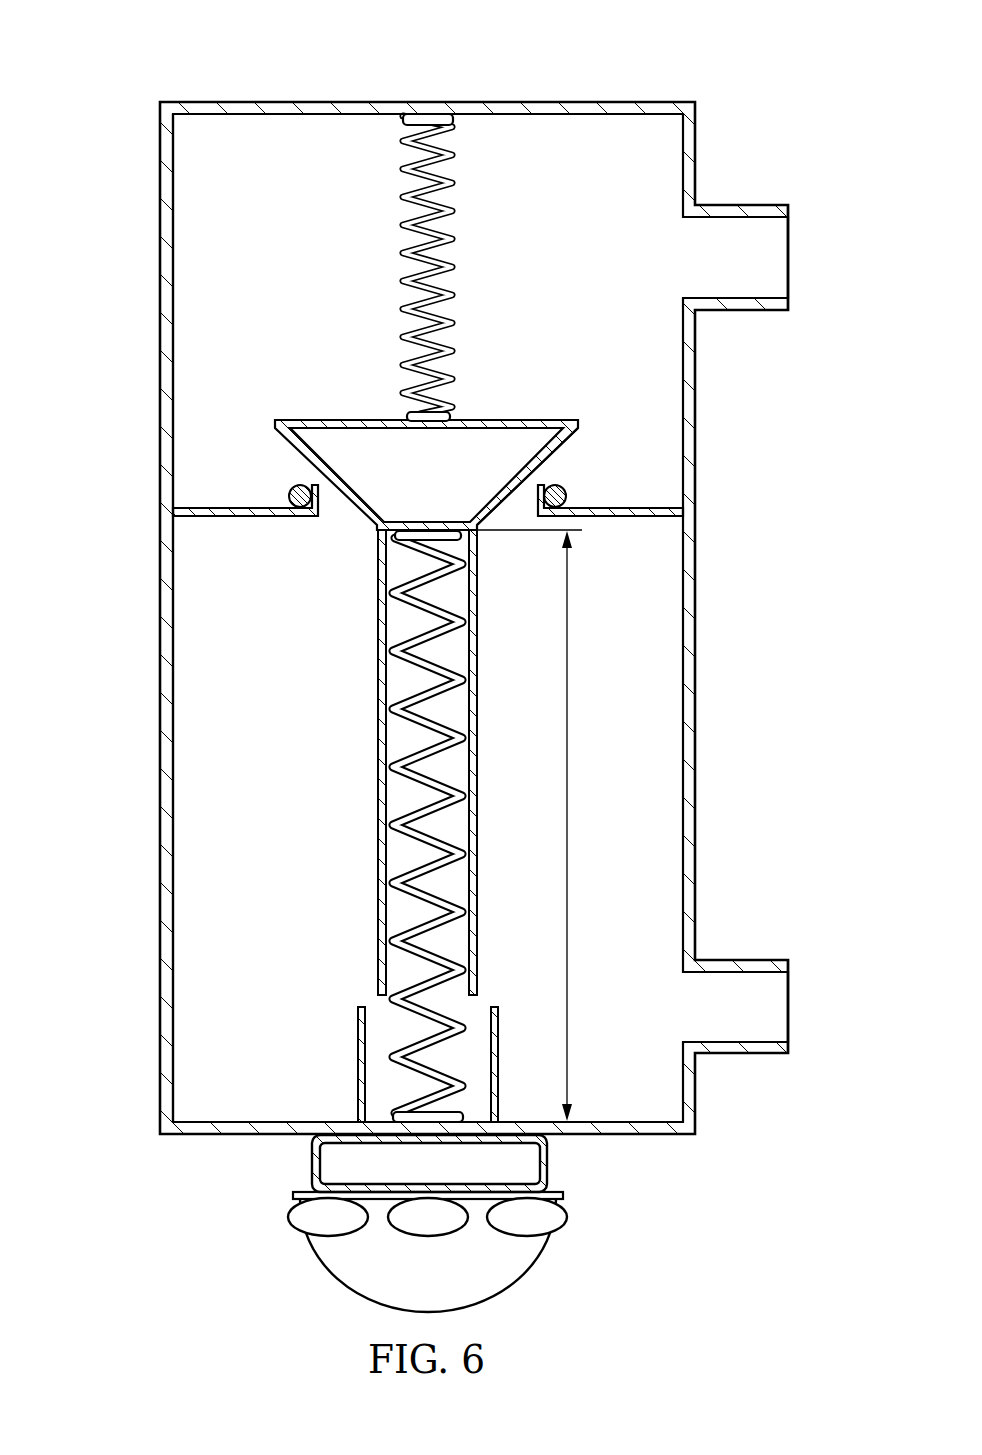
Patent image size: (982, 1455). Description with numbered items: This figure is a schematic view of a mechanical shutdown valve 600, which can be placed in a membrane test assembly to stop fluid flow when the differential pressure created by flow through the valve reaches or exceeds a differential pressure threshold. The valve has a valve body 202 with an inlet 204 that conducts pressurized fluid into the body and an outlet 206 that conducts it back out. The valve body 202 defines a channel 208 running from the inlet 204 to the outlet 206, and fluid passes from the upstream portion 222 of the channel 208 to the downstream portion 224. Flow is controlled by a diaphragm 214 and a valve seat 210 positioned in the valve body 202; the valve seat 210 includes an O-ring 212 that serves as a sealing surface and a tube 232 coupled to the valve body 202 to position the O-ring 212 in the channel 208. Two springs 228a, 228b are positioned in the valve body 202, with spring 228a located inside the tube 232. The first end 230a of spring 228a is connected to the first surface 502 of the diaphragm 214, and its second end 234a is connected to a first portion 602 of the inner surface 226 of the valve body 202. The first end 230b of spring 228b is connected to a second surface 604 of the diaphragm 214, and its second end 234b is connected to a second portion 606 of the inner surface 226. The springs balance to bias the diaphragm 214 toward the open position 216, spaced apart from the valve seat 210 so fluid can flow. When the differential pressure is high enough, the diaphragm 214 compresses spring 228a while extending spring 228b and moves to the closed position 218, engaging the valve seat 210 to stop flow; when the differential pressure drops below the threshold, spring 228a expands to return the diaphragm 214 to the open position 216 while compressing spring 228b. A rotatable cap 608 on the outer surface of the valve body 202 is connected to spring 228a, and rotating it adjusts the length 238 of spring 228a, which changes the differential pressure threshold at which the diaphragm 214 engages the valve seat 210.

The mechanical shutdown valve 600 is at (275, 64).
The second portion of the inner surface 606 is at (457, 113).
The second end of spring 228b 234b is at (403, 128).
The spring 228b is at (401, 285).
The upstream portion of the channel 222 is at (600, 283).
The inlet 204 is at (727, 206).
The first end of spring 228b 230b is at (407, 410).
The second surface of the diaphragm 604 is at (468, 419).
The diaphragm 214 is at (540, 434).
The open position 216 is at (596, 427).
The O-ring 212 is at (291, 487).
The closed position 218 is at (574, 473).
The valve seat 210 is at (289, 521).
The first end of spring 228a 230a is at (380, 538).
The first surface of the diaphragm 502 is at (477, 553).
The channel 208 is at (589, 589).
The spring 228a is at (394, 710).
The inner surface of the valve body 226 is at (173, 797).
The valve body 202 is at (690, 718).
The length of the spring 228a 238 is at (572, 838).
The downstream portion of the channel 224 is at (648, 941).
The tube 232 is at (379, 908).
The second end of spring 228a 234a is at (391, 1117).
The first portion of the inner surface 602 is at (478, 1119).
The outlet 206 is at (724, 1053).
The rotatable cap 608 is at (580, 1267).